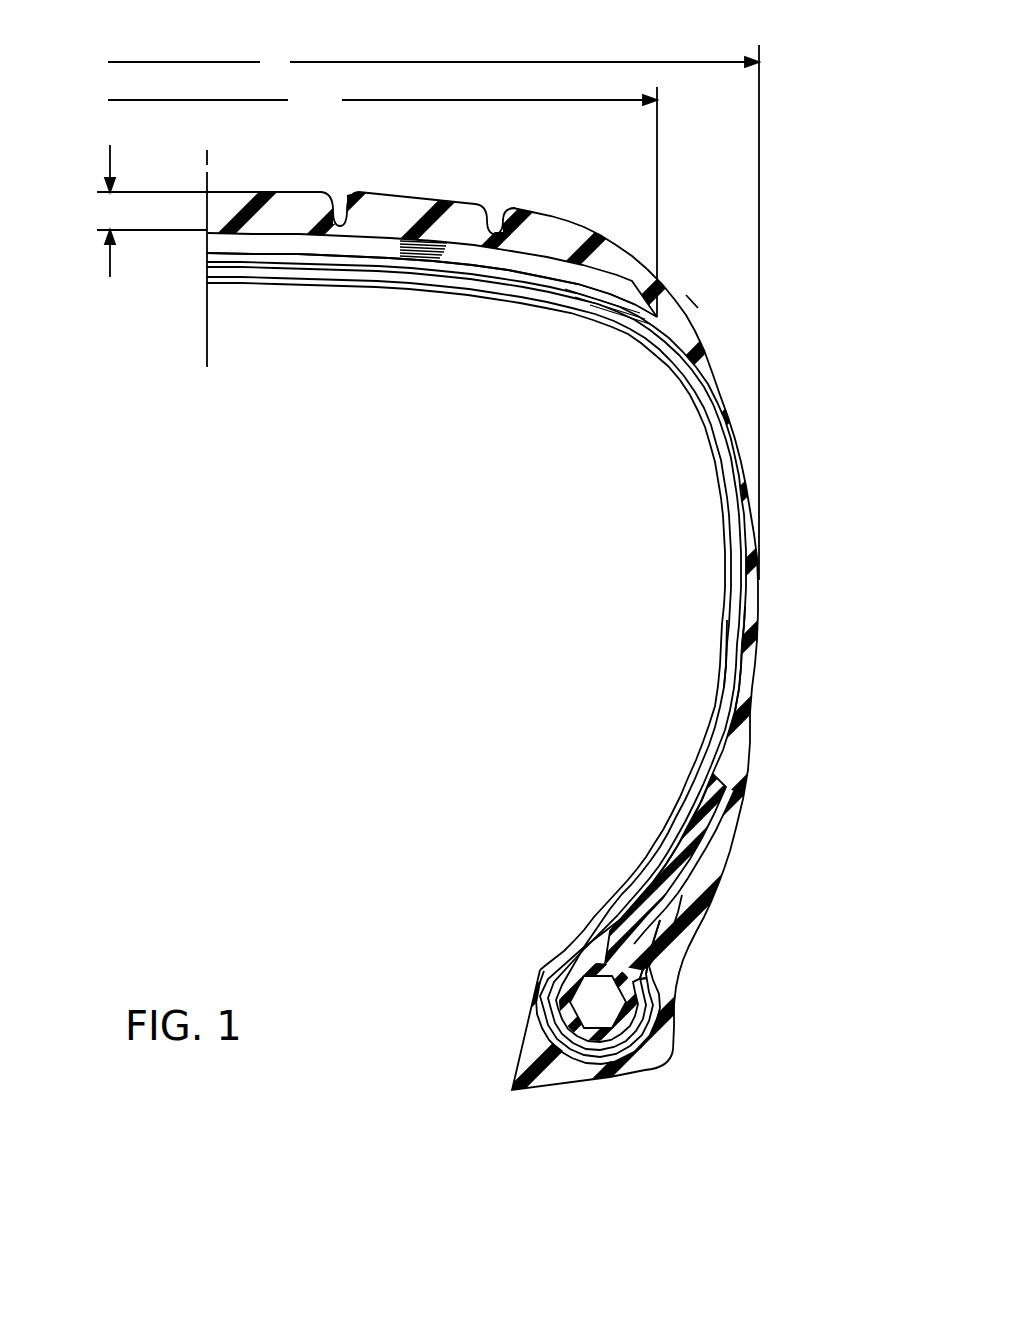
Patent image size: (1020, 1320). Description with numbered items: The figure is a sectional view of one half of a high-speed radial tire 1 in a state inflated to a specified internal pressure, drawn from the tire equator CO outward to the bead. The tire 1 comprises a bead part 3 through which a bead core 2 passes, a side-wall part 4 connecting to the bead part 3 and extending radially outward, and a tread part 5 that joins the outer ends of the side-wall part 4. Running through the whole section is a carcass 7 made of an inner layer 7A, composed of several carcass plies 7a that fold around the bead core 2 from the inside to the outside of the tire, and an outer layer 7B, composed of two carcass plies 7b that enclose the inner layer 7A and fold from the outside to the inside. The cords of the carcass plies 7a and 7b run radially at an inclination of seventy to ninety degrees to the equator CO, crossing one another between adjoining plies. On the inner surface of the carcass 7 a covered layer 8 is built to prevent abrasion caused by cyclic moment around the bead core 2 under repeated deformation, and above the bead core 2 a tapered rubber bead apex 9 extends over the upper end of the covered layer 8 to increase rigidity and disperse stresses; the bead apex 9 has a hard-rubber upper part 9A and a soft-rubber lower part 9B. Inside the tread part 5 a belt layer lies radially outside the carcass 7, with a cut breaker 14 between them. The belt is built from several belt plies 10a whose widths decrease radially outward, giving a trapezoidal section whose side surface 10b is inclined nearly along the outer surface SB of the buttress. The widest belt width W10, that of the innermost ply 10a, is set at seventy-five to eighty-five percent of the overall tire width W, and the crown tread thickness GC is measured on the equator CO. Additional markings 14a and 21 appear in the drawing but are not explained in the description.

The high-speed radial tire 1 is at (407, 602).
The bead core 2 is at (590, 1003).
The bead part 3 is at (694, 1044).
The side-wall part 4 is at (775, 554).
The tread part 5 is at (409, 184).
The carcass 7 is at (645, 527).
The inner layer 7A is at (737, 572).
The outer layer 7B is at (740, 535).
The carcass ply 7a is at (728, 645).
The carcass ply 7b is at (747, 663).
The covered layer 8 is at (690, 848).
The bead apex 9 is at (496, 858).
The upper part 9A is at (630, 933).
The lower part 9B is at (677, 860).
The belt ply 10a is at (447, 243).
The side surface 10b is at (650, 293).
The cut breaker 14 is at (425, 265).
The belt edge cushion rubber 14a is at (592, 300).
The tread rubber 21 is at (563, 213).
The overall tire width W is at (433, 312).
The widest width of the belt layer W10 is at (382, 202).
The equator of the tire CO is at (207, 188).
The crown tread thickness GC is at (108, 212).
The outer surface of the tire buttress part SB is at (692, 300).